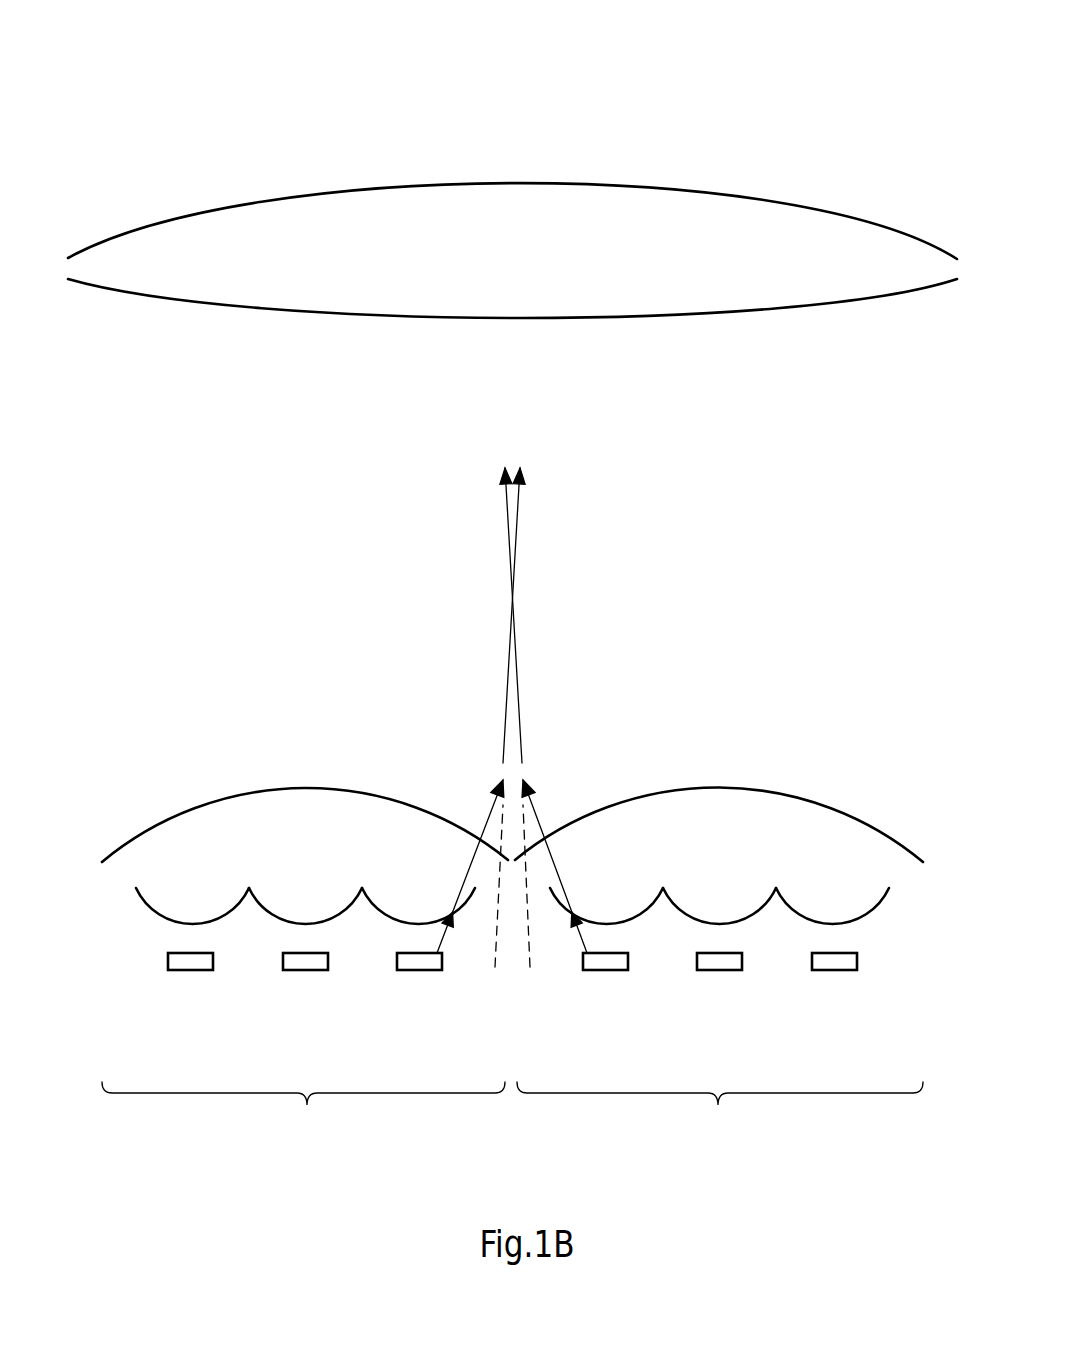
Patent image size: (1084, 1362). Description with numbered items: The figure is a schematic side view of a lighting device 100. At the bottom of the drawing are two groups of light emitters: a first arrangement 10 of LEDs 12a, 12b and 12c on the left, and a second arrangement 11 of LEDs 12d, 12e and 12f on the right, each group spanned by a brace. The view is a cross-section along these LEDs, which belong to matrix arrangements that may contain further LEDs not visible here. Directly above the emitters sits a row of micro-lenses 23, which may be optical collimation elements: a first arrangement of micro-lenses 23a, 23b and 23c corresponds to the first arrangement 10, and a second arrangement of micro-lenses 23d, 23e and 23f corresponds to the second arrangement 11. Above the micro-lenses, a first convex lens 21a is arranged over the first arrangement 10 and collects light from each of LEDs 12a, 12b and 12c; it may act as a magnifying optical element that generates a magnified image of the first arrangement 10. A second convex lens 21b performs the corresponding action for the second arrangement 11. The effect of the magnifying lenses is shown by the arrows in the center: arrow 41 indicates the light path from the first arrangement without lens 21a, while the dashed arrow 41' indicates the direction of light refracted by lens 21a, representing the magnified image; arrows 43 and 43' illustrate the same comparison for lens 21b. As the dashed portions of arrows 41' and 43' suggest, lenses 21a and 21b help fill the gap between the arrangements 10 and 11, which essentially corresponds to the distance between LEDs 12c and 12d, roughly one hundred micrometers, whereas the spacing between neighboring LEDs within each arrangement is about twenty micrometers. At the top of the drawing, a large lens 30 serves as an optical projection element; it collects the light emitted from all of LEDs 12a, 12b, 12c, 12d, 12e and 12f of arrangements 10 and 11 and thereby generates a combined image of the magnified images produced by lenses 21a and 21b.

The lighting device 100 is at (195, 130).
The lens 30 is at (789, 312).
The first convex lens 21a is at (256, 790).
The second convex lens 21b is at (768, 790).
The micro-lenses 23 is at (130, 913).
The micro-lens 23a is at (155, 917).
The micro-lens 23b is at (270, 917).
The micro-lens 23c is at (383, 917).
The micro-lens 23d is at (642, 917).
The micro-lens 23e is at (757, 917).
The micro-lens 23f is at (870, 917).
The LED 12a is at (195, 970).
The LED 12b is at (308, 970).
The LED 12c is at (423, 970).
The LED 12d is at (602, 970).
The LED 12e is at (717, 970).
The LED 12f is at (828, 970).
The arrow 41 is at (469, 710).
The arrow 43 is at (557, 710).
The arrow 41' is at (476, 911).
The arrow 43' is at (549, 911).
The first arrangement of LEDs 10 is at (303, 1110).
The second arrangement of LEDs 11 is at (720, 1110).